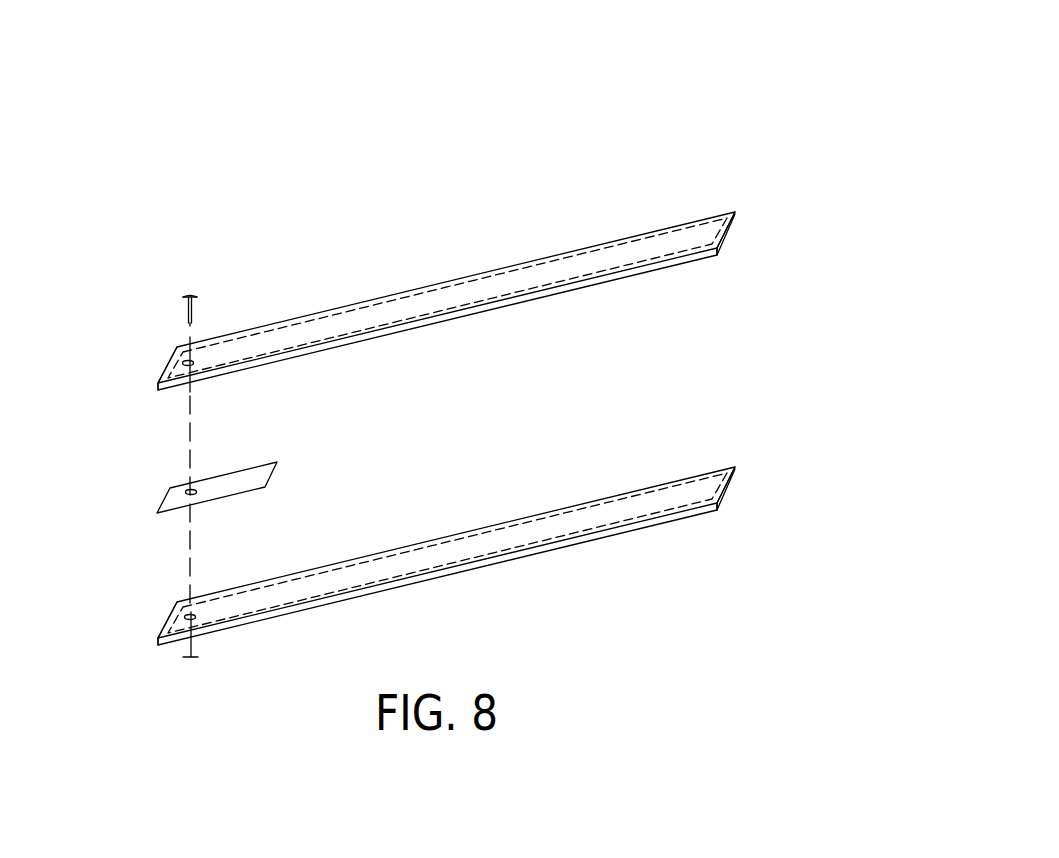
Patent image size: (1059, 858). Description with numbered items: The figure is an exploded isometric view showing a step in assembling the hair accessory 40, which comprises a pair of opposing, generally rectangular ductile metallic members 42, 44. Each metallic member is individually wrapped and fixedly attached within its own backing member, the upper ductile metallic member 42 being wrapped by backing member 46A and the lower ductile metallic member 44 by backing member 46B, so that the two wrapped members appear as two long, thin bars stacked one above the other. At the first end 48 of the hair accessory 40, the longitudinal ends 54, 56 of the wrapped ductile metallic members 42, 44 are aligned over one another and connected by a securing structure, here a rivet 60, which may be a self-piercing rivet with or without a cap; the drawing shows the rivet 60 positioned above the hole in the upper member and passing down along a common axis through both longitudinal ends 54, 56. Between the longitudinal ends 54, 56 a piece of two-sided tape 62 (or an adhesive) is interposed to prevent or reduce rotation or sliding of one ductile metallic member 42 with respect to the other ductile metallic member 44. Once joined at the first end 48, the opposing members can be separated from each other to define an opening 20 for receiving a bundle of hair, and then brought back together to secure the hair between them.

The opening 20 is at (707, 362).
The hair accessory 40 is at (723, 103).
The ductile metallic member 42 is at (609, 254).
The ductile metallic member 44 is at (574, 520).
The backing member 46A is at (700, 215).
The backing member 46B is at (677, 478).
The first end 48 is at (113, 383).
The longitudinal end 54 is at (197, 335).
The longitudinal end 56 is at (152, 645).
The rivet 60 is at (193, 280).
The two-sided tape 62 is at (272, 480).